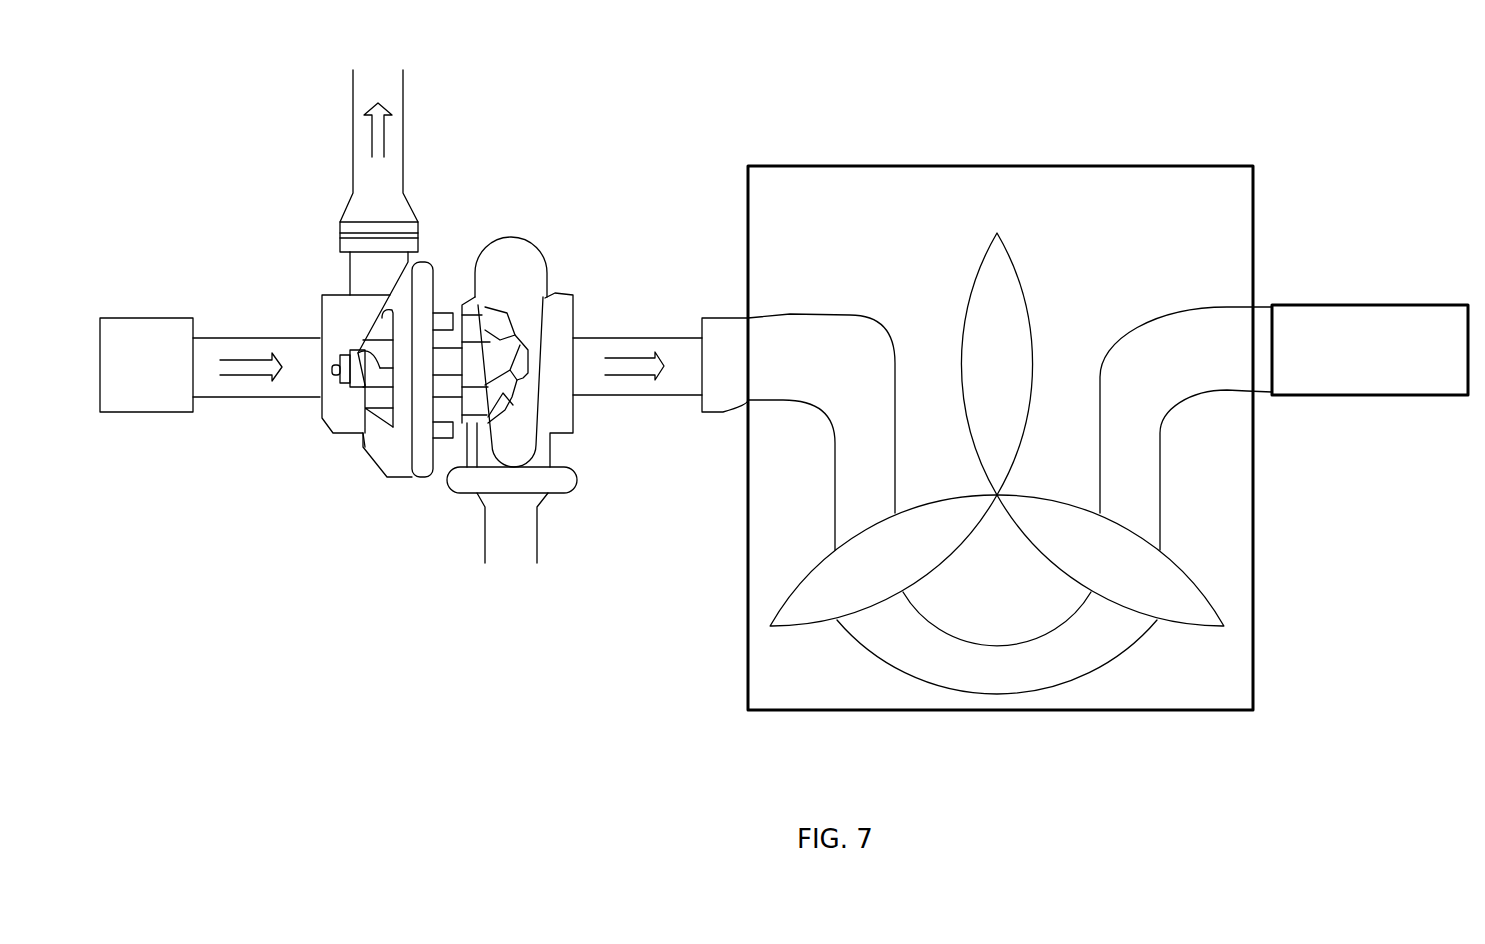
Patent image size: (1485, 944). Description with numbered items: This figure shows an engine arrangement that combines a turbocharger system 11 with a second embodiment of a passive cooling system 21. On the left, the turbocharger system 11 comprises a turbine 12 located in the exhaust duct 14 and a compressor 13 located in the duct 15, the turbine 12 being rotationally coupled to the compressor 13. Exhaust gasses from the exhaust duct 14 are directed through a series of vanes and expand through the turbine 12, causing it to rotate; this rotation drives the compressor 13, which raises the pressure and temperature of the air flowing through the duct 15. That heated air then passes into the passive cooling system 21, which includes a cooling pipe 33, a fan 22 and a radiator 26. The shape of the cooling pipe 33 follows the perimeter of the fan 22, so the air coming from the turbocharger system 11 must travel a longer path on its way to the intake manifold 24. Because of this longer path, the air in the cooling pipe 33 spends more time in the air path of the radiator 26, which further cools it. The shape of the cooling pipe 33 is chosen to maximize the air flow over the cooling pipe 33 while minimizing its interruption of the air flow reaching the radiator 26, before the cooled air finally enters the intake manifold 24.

The turbocharger system 11 is at (462, 233).
The turbine 12 is at (378, 438).
The compressor 13 is at (528, 277).
The exhaust duct 14 is at (232, 347).
The duct 15 is at (630, 345).
The passive cooling system 21 is at (1010, 380).
The fan 22 is at (985, 255).
The intake manifold 24 is at (1387, 302).
The radiator 26 is at (1076, 167).
The cooling pipe 33 is at (840, 338).